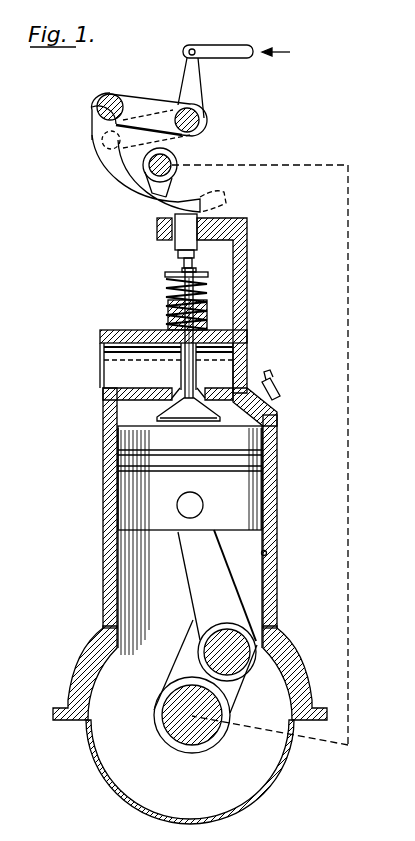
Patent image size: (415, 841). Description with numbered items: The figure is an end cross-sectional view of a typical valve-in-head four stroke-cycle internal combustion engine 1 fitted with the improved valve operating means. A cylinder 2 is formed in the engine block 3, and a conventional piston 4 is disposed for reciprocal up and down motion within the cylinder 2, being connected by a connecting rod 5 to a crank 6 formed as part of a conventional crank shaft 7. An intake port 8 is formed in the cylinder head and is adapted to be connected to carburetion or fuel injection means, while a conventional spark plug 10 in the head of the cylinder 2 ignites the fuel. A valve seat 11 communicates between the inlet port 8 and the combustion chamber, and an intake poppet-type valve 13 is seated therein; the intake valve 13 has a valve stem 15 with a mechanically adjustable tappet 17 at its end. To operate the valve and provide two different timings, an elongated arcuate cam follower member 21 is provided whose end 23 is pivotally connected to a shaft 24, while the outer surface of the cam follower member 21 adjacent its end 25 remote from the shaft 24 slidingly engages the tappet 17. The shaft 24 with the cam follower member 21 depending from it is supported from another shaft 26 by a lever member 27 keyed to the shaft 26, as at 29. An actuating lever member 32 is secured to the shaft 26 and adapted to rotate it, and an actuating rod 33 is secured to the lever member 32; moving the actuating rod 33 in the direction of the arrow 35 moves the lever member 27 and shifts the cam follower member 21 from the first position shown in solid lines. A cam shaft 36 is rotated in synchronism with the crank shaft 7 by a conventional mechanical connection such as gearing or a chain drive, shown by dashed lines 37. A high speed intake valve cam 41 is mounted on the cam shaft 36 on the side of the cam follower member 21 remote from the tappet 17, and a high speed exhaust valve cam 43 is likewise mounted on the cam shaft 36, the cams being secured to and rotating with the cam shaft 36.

The internal combustion engine 1 is at (262, 364).
The cylinder 2 is at (268, 552).
The engine block 3 is at (278, 596).
The piston 4 is at (234, 517).
The connecting rod 5 is at (196, 578).
The crank 6 is at (182, 672).
The crank shaft 7 is at (191, 736).
The intake port 8 is at (123, 334).
The spark plug 10 is at (281, 388).
The valve seat 11 is at (170, 390).
The intake valve 13 is at (198, 424).
The valve stem 15 is at (183, 292).
The tappet 17 is at (176, 246).
The cam follower member 21 is at (138, 204).
The end of cam follower member 23 is at (94, 109).
The shaft 24 is at (110, 94).
The end of cam follower member 25 is at (204, 199).
The shaft 26 is at (203, 120).
The lever member 27 is at (140, 93).
The key 29 is at (176, 117).
The actuating lever member 32 is at (205, 88).
The actuating rod 33 is at (221, 45).
The arrow 35 is at (285, 50).
The cam shaft 36 is at (172, 163).
The dashed lines 37 is at (350, 248).
The high speed intake valve cam 41 is at (176, 188).
The high speed exhaust valve cam 43 is at (155, 152).